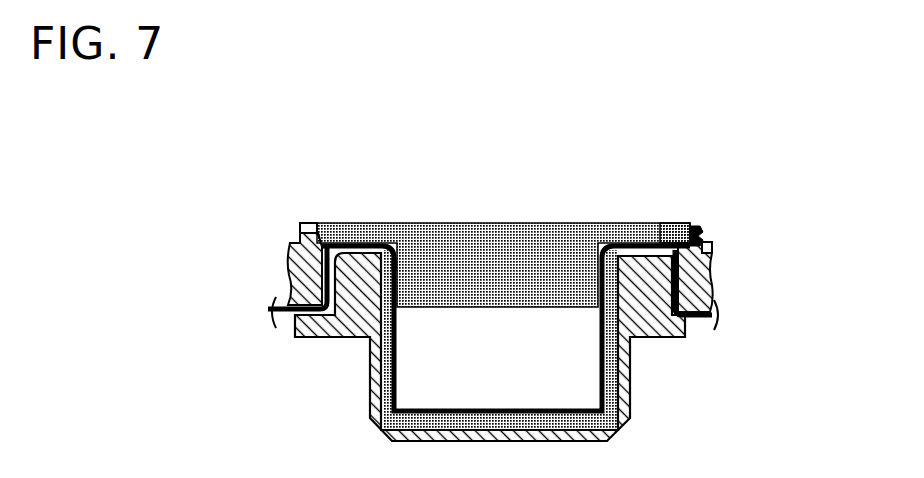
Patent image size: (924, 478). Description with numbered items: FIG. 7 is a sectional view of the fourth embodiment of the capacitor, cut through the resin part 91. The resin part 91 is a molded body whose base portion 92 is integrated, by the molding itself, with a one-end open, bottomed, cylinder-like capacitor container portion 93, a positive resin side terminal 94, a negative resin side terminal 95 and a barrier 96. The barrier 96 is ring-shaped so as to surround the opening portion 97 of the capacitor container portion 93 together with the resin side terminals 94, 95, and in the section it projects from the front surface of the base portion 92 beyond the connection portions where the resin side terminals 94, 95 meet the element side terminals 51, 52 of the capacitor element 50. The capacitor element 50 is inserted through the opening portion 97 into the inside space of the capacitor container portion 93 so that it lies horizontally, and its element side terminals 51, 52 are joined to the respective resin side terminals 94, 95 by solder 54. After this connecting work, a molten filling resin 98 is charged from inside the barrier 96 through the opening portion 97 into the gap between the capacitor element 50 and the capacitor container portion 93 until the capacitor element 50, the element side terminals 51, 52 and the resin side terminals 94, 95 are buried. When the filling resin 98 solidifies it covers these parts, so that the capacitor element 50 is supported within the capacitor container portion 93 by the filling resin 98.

The capacitor element 50 is at (518, 348).
The element side terminal 51 is at (660, 223).
The element side terminal 52 is at (346, 226).
The solder 54 is at (298, 232).
The resin part 91 is at (282, 263).
The base portion 92 is at (710, 272).
The capacitor container portion 93 is at (630, 420).
The positive resin side terminal 94 is at (715, 315).
The negative resin side terminal 95 is at (267, 312).
The barrier 96 is at (697, 228).
The opening portion 97 is at (378, 252).
The filling resin 98 is at (520, 222).